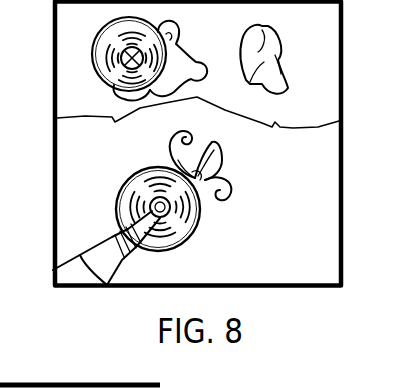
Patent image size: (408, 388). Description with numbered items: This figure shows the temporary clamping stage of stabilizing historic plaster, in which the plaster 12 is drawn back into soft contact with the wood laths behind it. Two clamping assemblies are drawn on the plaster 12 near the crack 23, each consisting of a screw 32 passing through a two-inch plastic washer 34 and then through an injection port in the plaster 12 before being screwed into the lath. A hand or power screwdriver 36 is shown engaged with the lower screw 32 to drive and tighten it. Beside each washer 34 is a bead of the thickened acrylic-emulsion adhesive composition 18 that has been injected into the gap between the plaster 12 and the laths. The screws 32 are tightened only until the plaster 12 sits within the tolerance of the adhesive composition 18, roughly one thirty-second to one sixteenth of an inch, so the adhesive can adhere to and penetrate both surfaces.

The plaster 12 is at (291, 233).
The adhesive composition 18 is at (262, 33).
The crack 23 is at (277, 130).
The screws 32 is at (122, 68).
The plastic washers 34 is at (117, 38).
The screwdriver 36 is at (102, 255).